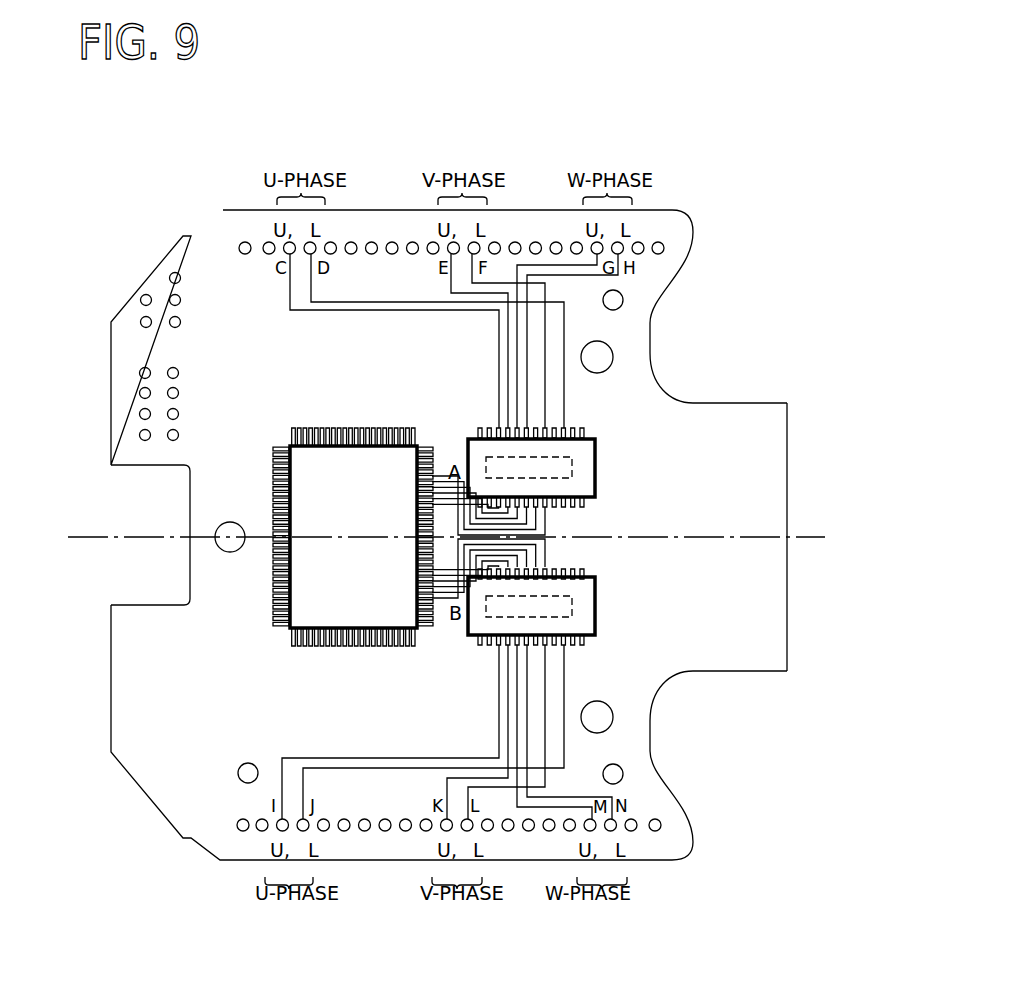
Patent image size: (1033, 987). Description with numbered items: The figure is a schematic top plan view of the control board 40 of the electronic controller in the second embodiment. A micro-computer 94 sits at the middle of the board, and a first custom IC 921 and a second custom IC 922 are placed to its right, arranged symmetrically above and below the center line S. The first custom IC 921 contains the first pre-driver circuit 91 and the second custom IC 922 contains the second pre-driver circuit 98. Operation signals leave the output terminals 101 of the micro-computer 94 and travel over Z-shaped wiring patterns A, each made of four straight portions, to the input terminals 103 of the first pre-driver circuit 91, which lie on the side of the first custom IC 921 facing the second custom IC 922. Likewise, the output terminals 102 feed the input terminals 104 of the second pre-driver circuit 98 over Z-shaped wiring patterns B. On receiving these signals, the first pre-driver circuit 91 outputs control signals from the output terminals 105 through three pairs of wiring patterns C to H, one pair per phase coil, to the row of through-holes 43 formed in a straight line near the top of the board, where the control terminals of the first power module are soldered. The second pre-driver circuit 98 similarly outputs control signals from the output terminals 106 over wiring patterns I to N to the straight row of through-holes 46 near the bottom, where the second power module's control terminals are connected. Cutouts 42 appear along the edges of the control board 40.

The control board 40 is at (180, 772).
The notch (cutout) of circuit board 42 is at (655, 325).
The through-holes 43 is at (239, 244).
The through-holes 46 is at (243, 831).
The micro-computer 94 is at (320, 607).
The first pre-driver circuit 91 is at (572, 472).
The first custom IC 921 is at (593, 453).
The second pre-driver circuit 98 is at (572, 606).
The second custom IC 922 is at (578, 623).
The output terminals 101 is at (437, 473).
The output terminals 102 is at (440, 603).
The input terminals 103 is at (547, 506).
The input terminals 104 is at (545, 570).
The output terminals 105 is at (494, 430).
The output terminals 106 is at (497, 644).
The center line S is at (92, 537).